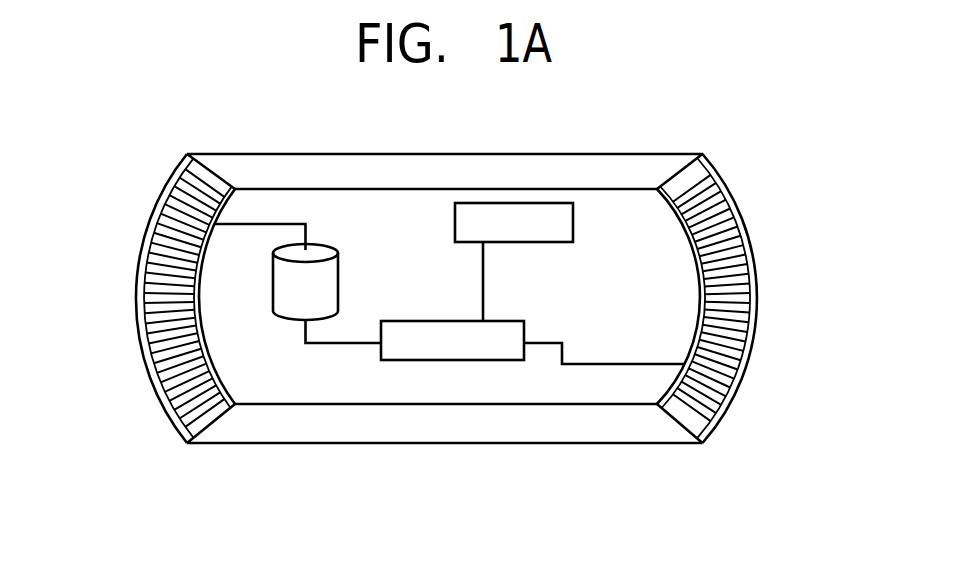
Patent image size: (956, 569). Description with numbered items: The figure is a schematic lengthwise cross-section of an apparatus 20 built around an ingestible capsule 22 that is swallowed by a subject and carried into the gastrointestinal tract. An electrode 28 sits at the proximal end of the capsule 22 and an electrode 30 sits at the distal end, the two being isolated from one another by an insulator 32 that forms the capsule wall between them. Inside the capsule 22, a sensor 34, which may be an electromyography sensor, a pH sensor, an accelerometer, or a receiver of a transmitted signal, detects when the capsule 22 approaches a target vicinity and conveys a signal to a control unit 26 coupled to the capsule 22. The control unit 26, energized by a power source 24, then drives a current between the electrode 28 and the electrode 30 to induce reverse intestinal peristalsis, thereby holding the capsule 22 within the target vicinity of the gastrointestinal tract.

The apparatus 20 is at (655, 120).
The ingestible capsule 22 is at (278, 443).
The power source 24 is at (338, 283).
The control unit 26 is at (460, 360).
The electrode 28 is at (165, 238).
The electrode 30 is at (735, 224).
The insulator 32 is at (332, 158).
The sensor 34 is at (542, 242).